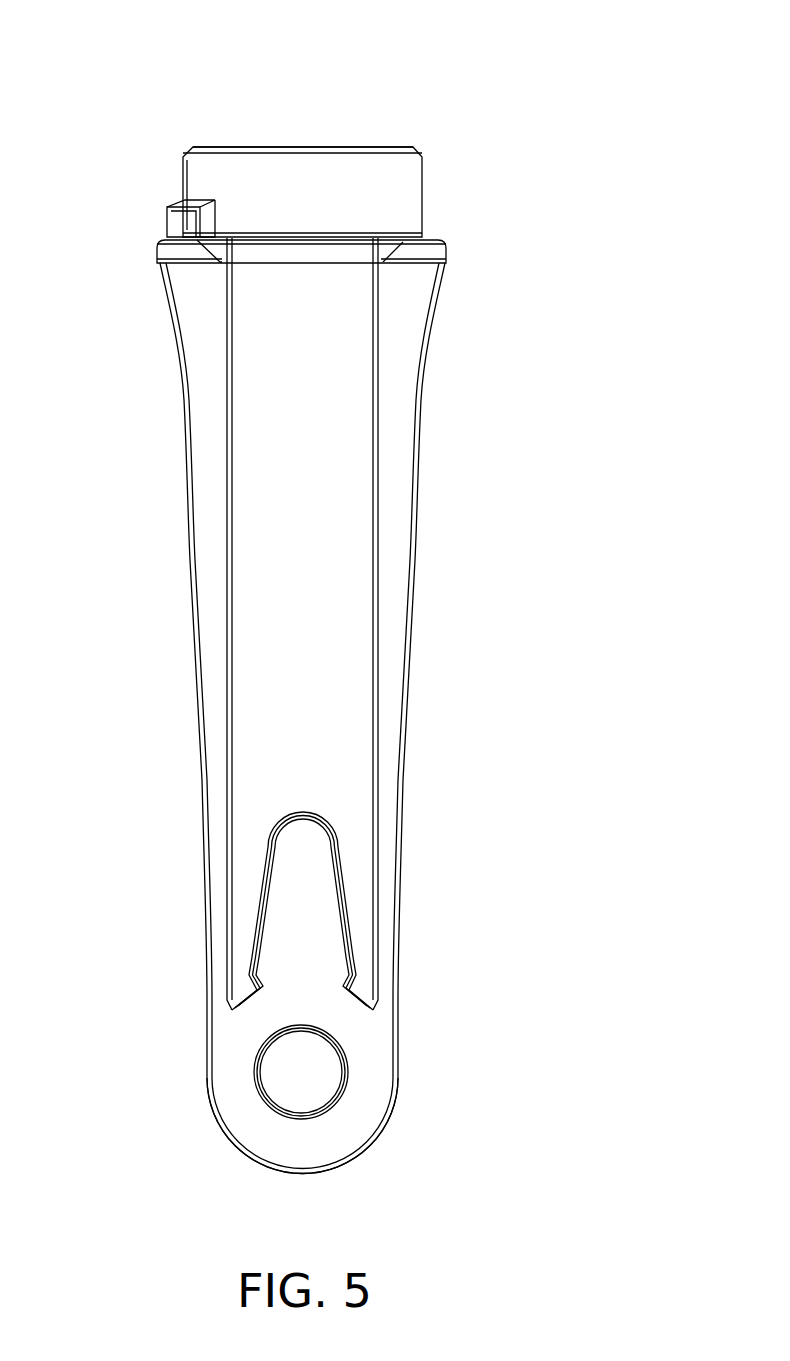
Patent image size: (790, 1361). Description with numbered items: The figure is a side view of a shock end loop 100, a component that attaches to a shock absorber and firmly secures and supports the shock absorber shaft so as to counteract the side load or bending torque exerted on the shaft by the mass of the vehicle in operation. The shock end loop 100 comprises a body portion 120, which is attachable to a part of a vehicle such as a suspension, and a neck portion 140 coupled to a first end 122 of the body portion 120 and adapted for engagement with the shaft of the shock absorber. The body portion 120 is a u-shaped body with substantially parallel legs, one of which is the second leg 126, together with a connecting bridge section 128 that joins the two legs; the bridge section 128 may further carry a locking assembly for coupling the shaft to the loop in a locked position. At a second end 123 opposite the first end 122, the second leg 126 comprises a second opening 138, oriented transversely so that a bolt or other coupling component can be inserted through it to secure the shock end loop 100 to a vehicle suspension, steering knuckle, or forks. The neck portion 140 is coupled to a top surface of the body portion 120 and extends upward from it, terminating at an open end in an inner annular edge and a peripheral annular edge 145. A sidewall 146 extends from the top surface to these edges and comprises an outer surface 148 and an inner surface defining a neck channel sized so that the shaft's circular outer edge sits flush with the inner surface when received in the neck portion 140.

The shock end loop 100 is at (146, 70).
The body portion 120 is at (482, 321).
The first end 122 is at (455, 228).
The second end 123 is at (219, 1176).
The second leg 126 is at (343, 600).
The connecting bridge section 128 is at (205, 239).
The second opening 138 is at (302, 1070).
The neck portion 140 is at (429, 156).
The peripheral annular edge 145 is at (238, 150).
The sidewall 146 is at (180, 175).
The outer surface 148 is at (295, 187).